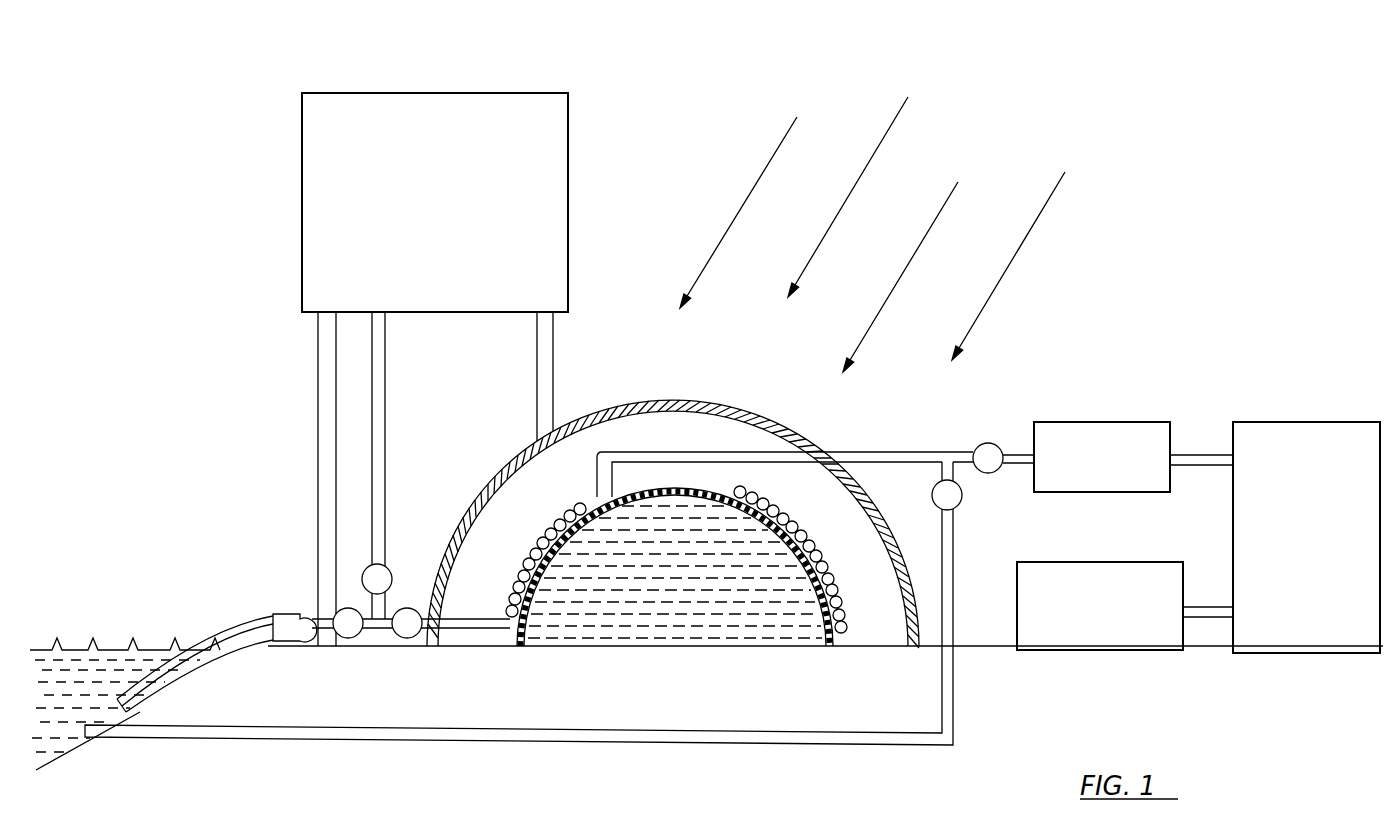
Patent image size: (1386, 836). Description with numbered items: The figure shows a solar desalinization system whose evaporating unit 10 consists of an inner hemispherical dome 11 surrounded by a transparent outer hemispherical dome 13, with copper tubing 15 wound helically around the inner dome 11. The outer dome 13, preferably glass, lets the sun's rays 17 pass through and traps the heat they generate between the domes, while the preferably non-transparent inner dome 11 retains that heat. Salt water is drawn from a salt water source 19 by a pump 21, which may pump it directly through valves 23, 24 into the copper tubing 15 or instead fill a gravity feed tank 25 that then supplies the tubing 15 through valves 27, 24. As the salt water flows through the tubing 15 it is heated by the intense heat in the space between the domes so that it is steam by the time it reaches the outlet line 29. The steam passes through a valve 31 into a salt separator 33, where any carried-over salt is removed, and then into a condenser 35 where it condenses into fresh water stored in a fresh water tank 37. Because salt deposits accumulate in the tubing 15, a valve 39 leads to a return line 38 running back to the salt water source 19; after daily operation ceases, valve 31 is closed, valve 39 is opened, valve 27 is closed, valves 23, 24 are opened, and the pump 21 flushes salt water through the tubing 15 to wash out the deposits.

The evaporating unit 10 is at (704, 394).
The inner hemispherical dome 11 is at (824, 648).
The outer hemispherical dome 13 is at (778, 426).
The copper tubing 15 is at (511, 580).
The sun's rays 17 is at (868, 170).
The salt water source 19 is at (73, 650).
The pump 21 is at (290, 612).
The valve 23 is at (352, 640).
The valve 24 is at (412, 640).
The gravity feed tank 25 is at (315, 207).
The valve 27 is at (388, 566).
The outlet line 29 is at (690, 452).
The valve 31 is at (984, 442).
The salt separator 33 is at (1100, 422).
The condenser 35 is at (1300, 422).
The fresh water tank 37 is at (1100, 562).
The return pipe 38 is at (570, 738).
The valve 39 is at (963, 497).